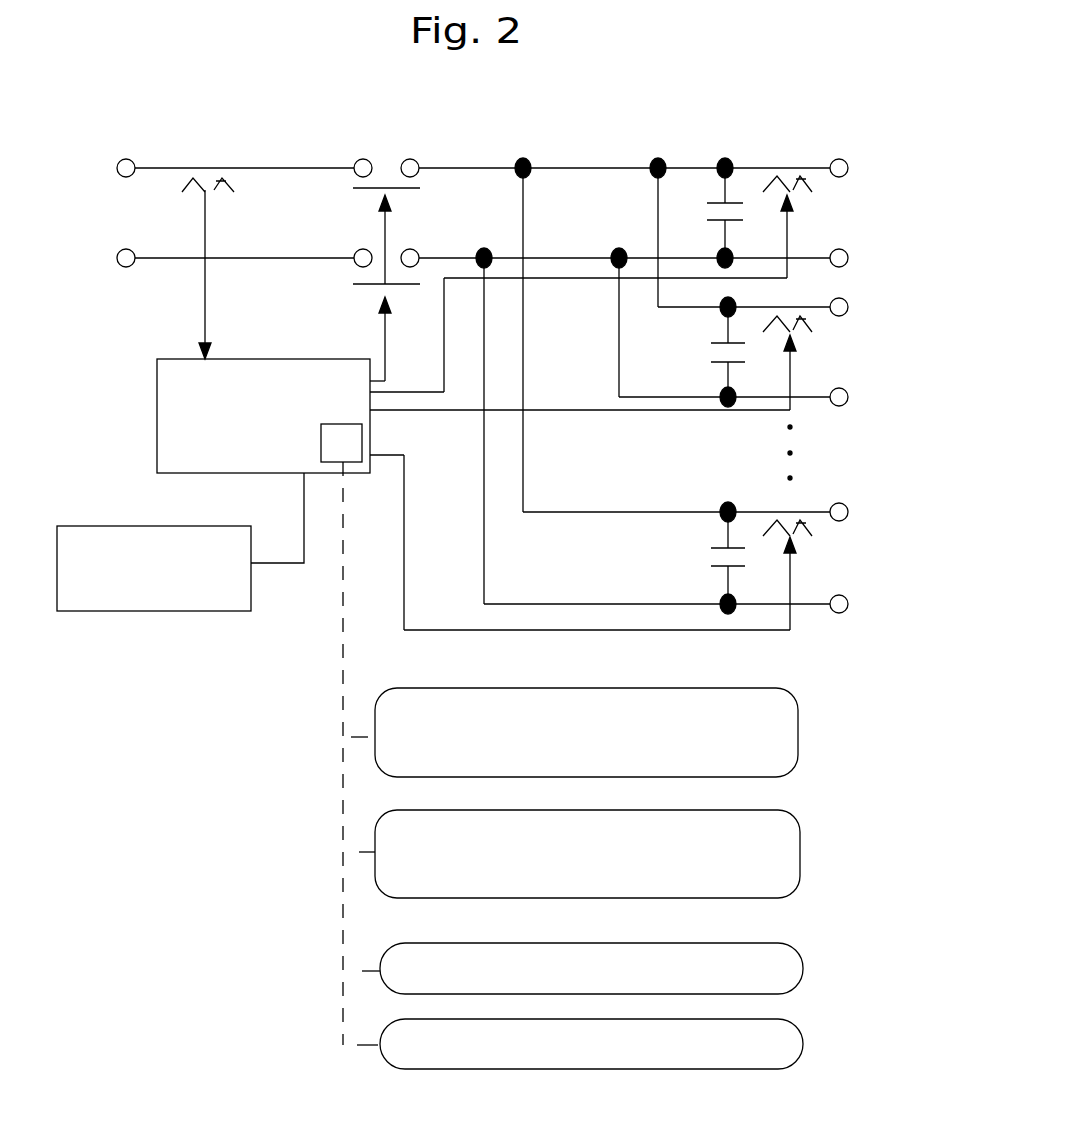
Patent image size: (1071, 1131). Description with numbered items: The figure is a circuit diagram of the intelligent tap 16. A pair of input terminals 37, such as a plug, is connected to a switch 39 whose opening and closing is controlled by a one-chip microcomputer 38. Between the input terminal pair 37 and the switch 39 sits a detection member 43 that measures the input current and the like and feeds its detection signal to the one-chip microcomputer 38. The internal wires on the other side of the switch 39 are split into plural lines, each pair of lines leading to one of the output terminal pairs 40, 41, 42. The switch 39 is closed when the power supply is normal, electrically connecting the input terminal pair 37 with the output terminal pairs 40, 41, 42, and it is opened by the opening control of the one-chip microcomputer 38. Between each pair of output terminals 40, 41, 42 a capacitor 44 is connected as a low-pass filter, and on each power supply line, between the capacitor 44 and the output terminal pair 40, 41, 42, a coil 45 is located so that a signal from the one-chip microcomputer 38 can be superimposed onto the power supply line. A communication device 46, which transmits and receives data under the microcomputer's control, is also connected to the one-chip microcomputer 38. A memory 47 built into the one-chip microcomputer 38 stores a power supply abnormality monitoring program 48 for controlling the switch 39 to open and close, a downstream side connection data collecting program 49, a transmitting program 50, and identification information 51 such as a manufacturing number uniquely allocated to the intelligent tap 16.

The intelligent tap 16 is at (597, 150).
The input terminal pair 37 is at (119, 175).
The one-chip microcomputer 38 is at (157, 418).
The switch 39 is at (385, 186).
The output terminal pair 40 is at (846, 175).
The output terminal pair 41 is at (846, 313).
The output terminal pair 42 is at (846, 518).
The detection member 43 is at (232, 178).
The capacitor 44 is at (730, 203).
The coil 45 is at (802, 190).
The communication device 46 is at (190, 600).
The memory 47 is at (347, 443).
The power supply abnormality monitoring program 48 is at (795, 711).
The downstream side connection data collecting program 49 is at (797, 855).
The transmitting program 50 is at (800, 968).
The identification information 51 is at (800, 1043).